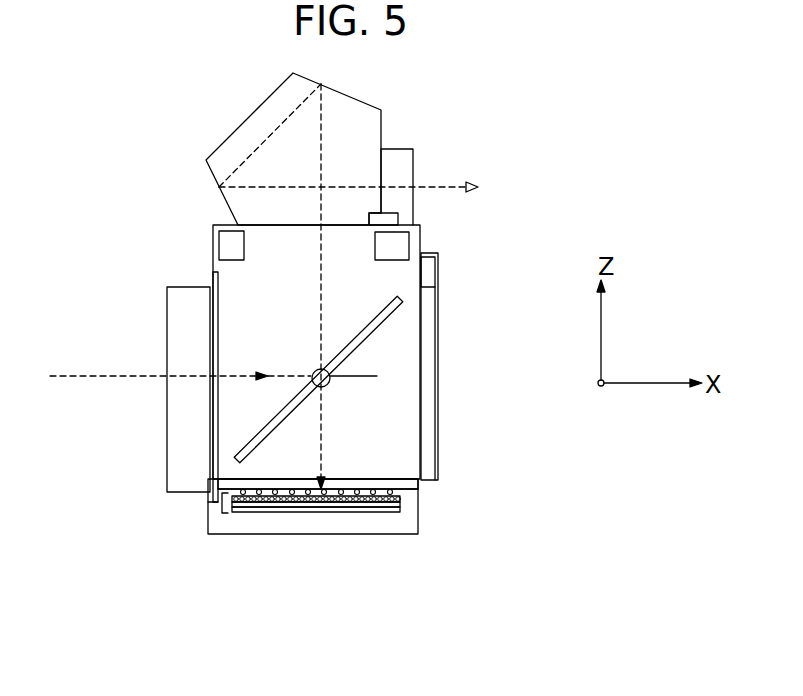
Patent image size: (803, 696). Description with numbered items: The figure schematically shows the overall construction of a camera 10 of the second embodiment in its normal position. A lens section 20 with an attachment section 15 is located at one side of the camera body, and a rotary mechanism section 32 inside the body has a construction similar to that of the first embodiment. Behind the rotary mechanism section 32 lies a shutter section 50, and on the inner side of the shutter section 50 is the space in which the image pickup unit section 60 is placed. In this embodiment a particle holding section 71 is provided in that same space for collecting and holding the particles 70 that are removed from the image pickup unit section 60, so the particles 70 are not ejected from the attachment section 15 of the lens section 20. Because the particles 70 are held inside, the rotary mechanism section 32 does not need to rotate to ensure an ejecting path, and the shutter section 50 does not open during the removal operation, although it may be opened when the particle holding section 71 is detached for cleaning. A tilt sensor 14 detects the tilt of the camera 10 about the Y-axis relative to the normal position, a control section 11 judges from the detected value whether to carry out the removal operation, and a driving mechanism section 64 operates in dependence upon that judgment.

The camera 10 is at (186, 141).
The control section 11 is at (400, 257).
The tilt sensor 14 is at (228, 247).
The attachment section 15 is at (218, 312).
The lens section 20 is at (172, 487).
The rotary mechanism section 32 is at (307, 373).
The shutter section 50 is at (385, 482).
The image pickup unit section 60 is at (414, 508).
The driving mechanism section 64 is at (367, 512).
The particles 70 is at (392, 492).
The particle holding section 71 is at (208, 510).